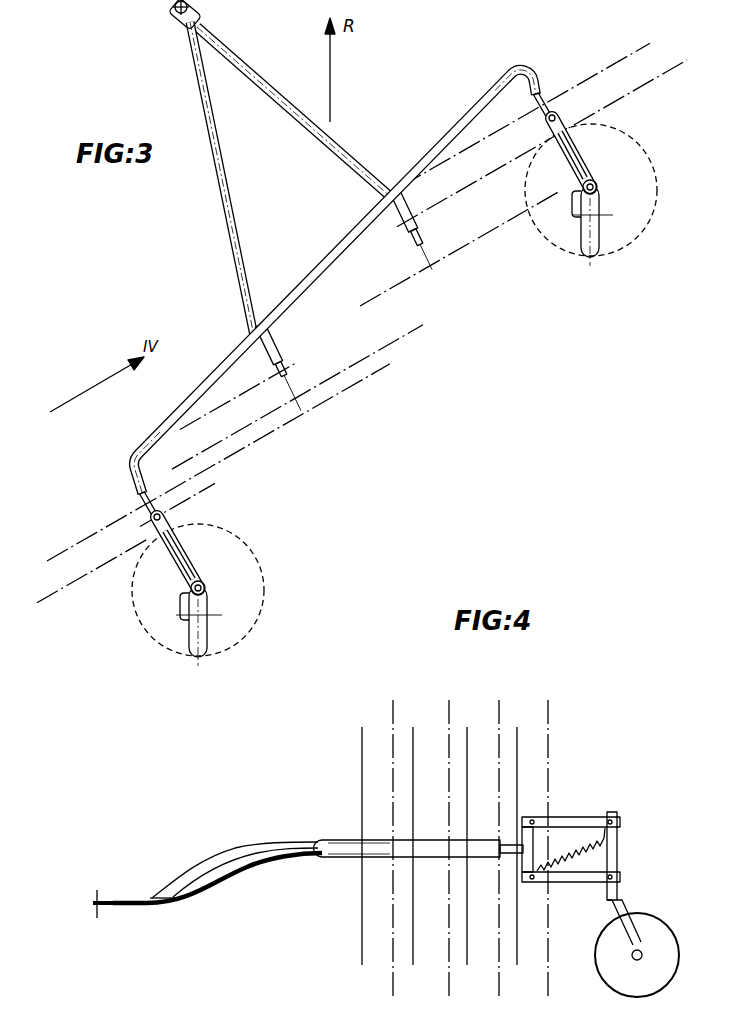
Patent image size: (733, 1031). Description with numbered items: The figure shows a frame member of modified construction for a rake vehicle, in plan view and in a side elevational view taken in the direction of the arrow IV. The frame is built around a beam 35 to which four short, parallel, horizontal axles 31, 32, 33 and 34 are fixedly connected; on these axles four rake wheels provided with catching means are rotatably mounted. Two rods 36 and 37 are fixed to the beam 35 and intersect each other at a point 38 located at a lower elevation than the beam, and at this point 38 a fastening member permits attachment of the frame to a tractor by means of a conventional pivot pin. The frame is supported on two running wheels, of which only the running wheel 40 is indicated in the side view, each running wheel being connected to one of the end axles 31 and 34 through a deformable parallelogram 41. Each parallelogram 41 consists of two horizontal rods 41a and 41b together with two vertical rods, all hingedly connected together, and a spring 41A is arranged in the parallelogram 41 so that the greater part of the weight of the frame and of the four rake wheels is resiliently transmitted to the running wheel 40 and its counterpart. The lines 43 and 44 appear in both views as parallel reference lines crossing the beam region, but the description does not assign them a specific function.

In FIG. 3, the axle 31 is at (547, 79).
In FIG. 3, the axle 32 is at (416, 210).
In FIG. 3, the axle 33 is at (284, 364).
In FIG. 3, the axle 34 is at (152, 490).
In FIG. 4, the axle 34 is at (507, 853).
In FIG. 3, the beam 35 is at (328, 247).
In FIG. 4, the beam 35 is at (428, 852).
In FIG. 3, the rod 36 is at (310, 123).
In FIG. 4, the rod 36 is at (223, 853).
In FIG. 3, the rod 37 is at (224, 185).
In FIG. 4, the rod 37 is at (232, 878).
In FIG. 3, the point of intersection 38 is at (187, 25).
In FIG. 4, the point of intersection 38 is at (135, 887).
In FIG. 4, the running wheel 40 is at (607, 955).
In FIG. 3, the deformable parallelogram 41 is at (586, 152).
In FIG. 4, the horizontal rod 41a is at (565, 818).
In FIG. 4, the horizontal rod 41b is at (617, 849).
In FIG. 4, the spring 41A is at (558, 858).
In FIG. 3, the furrow line 43 is at (598, 68).
In FIG. 4, the furrow line 43 is at (358, 736).
In FIG. 3, the furrow line 44 is at (628, 88).
In FIG. 4, the furrow line 44 is at (392, 736).